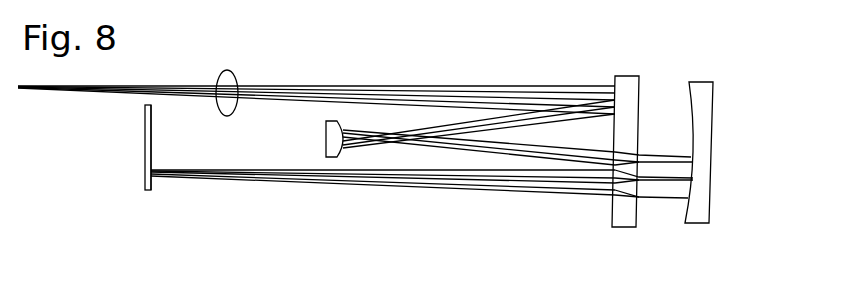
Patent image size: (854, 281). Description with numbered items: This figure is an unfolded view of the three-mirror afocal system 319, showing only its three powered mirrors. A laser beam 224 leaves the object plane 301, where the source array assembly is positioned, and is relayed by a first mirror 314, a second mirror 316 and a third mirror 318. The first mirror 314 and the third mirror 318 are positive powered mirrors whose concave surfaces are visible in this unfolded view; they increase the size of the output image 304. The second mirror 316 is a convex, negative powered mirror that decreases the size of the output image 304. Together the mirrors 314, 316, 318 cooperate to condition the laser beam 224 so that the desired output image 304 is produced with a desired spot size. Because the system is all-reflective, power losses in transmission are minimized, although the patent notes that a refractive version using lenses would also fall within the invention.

The laser beam 224 is at (230, 71).
The object plane 301 is at (145, 130).
The output image 304 is at (140, 158).
The first mirror 314 is at (657, 72).
The second mirror 316 is at (326, 140).
The third mirror 318 is at (713, 92).
The three-mirror afocal system 319 is at (678, 116).